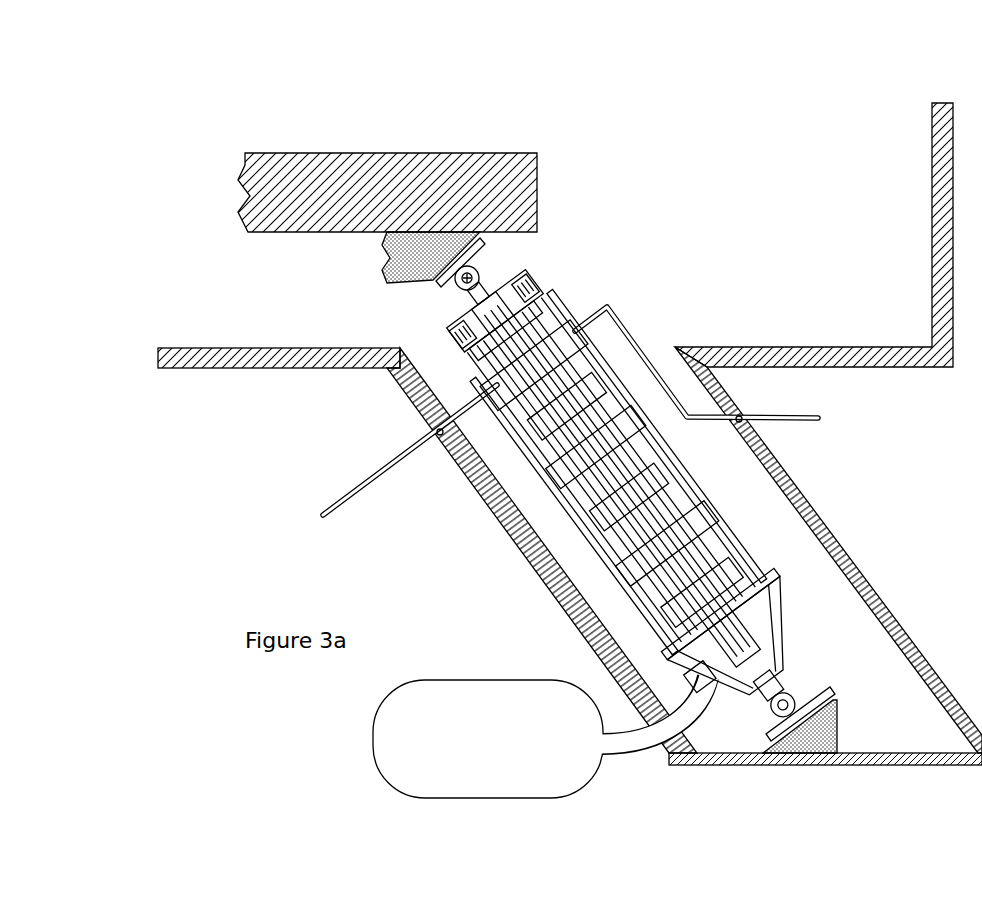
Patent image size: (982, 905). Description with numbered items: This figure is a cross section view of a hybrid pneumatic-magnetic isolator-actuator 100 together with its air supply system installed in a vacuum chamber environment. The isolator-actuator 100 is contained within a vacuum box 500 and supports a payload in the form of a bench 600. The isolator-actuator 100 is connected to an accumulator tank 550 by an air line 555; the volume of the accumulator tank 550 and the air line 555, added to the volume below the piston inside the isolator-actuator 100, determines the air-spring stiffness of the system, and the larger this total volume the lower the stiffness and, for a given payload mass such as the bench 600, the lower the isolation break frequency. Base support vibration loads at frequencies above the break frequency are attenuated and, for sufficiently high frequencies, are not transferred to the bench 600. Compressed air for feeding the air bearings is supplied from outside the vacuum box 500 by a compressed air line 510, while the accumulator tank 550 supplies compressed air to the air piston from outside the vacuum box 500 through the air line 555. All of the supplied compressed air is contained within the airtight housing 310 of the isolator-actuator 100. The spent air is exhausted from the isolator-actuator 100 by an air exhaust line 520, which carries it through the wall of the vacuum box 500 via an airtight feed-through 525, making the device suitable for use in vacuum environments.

The hybrid pneumatic-magnetic isolator-actuator 100 is at (815, 652).
The airtight housing 310 is at (650, 472).
The vacuum box 500 is at (570, 434).
The compressed air line 510 is at (397, 450).
The air exhaust line 520 is at (719, 381).
The airtight feed-through 525 is at (613, 447).
The accumulator tank 550 is at (488, 715).
The air line 555 is at (655, 736).
The bench 600 is at (387, 205).